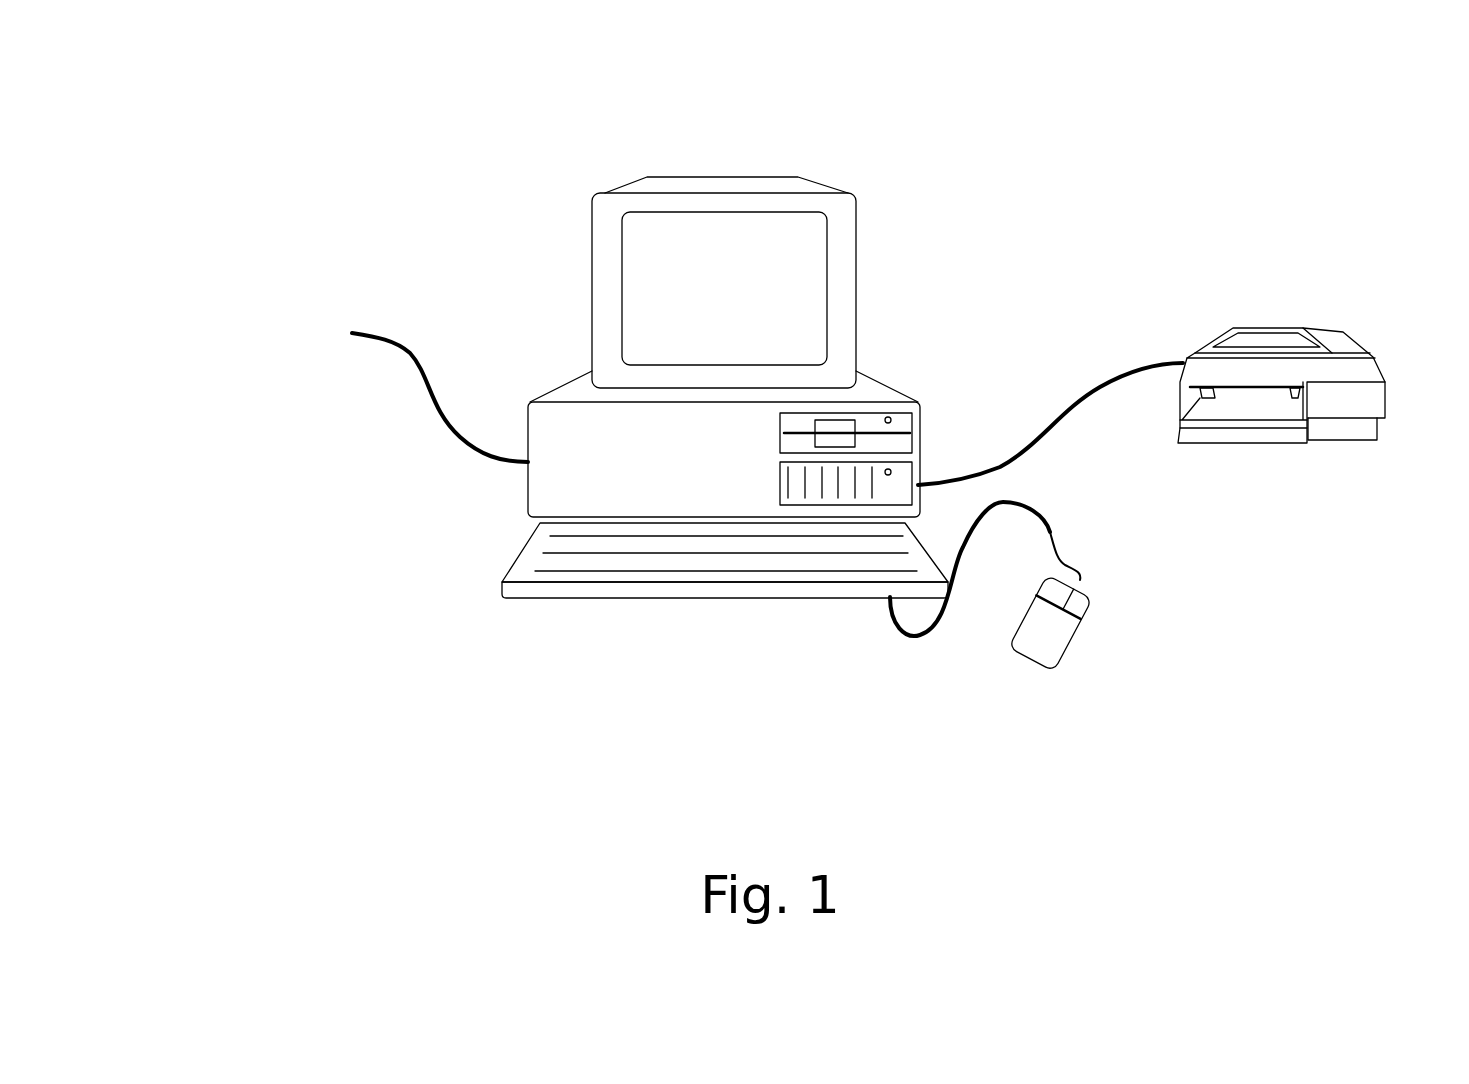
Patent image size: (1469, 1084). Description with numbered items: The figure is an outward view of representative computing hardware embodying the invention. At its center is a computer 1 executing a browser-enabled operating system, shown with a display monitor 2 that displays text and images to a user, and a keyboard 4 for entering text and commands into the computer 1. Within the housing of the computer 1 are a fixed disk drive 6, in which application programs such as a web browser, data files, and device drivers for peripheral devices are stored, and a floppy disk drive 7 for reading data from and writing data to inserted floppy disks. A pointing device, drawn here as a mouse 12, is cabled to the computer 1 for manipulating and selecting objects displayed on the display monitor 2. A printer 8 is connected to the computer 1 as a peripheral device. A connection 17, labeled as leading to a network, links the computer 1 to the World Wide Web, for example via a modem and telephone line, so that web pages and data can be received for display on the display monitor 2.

The computer 1 is at (897, 152).
The display monitor 2 is at (597, 307).
The keyboard 4 is at (587, 598).
The fixed disk drive 6 is at (823, 503).
The floppy disk drive 7 is at (912, 440).
The printer 8 is at (1388, 383).
The mouse 12 is at (1037, 672).
The connection 17 is at (470, 450).